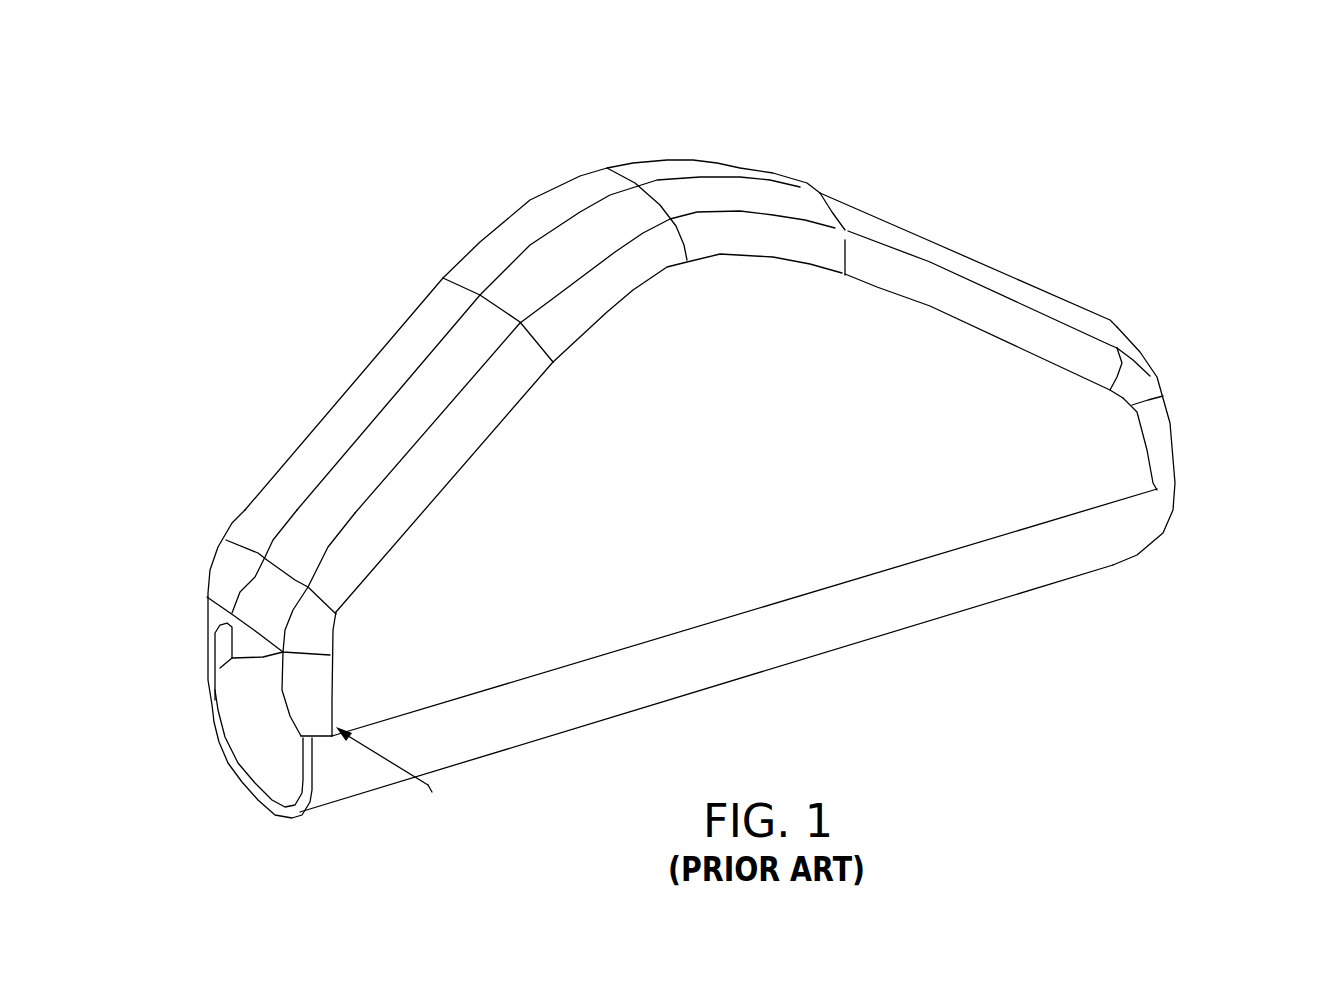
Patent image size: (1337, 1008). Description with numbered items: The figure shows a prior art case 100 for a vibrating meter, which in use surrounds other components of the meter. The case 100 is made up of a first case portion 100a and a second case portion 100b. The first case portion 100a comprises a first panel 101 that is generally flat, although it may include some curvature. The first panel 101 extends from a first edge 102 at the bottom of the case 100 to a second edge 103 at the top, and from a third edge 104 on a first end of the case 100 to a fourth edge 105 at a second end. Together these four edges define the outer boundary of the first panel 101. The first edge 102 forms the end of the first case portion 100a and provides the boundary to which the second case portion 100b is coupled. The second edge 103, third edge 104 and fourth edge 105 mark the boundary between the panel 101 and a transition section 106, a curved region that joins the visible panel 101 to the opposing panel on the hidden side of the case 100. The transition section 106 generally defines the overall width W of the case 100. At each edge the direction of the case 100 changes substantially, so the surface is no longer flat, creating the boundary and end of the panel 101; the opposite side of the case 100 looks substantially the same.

The case 100 is at (776, 208).
The first case portion 100a is at (1210, 446).
The second case portion 100b is at (706, 688).
The first panel 101 is at (751, 468).
The first edge 102 is at (744, 612).
The second edge 103 is at (971, 254).
The third edge 104 is at (319, 664).
The fourth edge 105 is at (1110, 419).
The transition section 106 is at (370, 493).
The width W is at (190, 630).